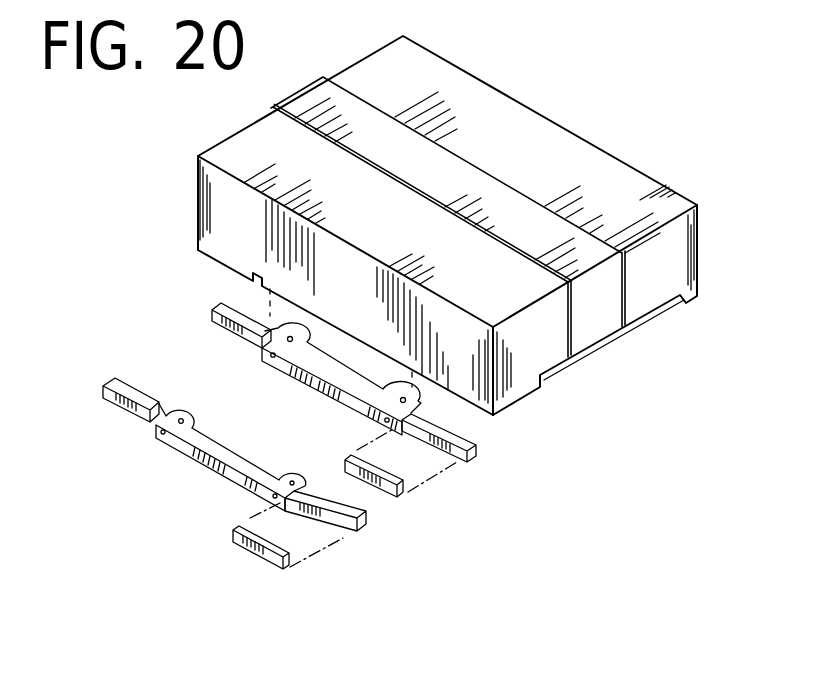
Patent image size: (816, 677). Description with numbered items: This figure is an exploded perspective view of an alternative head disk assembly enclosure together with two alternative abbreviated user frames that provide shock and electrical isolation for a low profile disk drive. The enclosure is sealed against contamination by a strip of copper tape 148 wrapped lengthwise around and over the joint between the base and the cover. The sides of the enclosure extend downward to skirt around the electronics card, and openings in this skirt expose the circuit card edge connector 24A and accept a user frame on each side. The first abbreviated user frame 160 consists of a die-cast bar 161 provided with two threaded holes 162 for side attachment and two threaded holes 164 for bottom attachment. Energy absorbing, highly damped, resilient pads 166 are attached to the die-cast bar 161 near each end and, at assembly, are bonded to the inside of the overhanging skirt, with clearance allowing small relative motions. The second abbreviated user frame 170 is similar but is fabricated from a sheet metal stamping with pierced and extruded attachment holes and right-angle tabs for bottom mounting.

The circuit card edge connector 24A is at (612, 338).
The strip of copper tape 148 is at (508, 204).
The first abbreviated user frame 160 is at (338, 384).
The die-cast bar 161 is at (368, 408).
The threaded holes for side attachment 162 is at (271, 358).
The threaded holes for bottom attachment 164 is at (295, 340).
The resilient strips or pads 166 is at (234, 332).
The second abbreviated user frame 170 is at (214, 473).